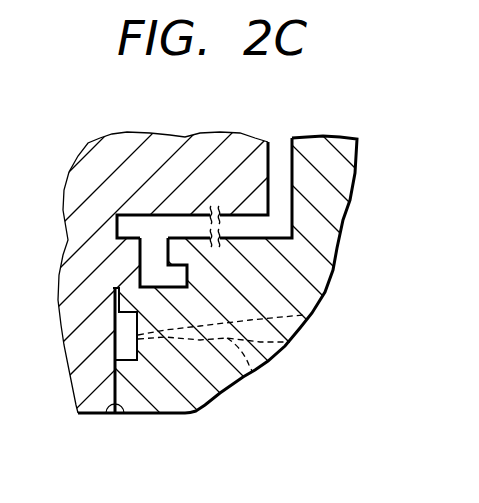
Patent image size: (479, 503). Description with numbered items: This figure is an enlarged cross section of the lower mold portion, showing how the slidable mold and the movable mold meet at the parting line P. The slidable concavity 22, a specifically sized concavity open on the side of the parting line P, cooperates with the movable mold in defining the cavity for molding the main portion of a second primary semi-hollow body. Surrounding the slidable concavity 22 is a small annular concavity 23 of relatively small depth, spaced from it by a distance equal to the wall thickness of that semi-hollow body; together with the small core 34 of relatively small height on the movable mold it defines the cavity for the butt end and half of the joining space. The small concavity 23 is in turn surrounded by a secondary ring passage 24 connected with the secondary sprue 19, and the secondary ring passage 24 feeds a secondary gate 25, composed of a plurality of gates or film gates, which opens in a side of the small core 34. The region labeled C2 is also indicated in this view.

The slidable concavity 22 is at (293, 160).
The second chip C2 is at (280, 198).
The small core 34 is at (127, 256).
The secondary gate 25 is at (112, 307).
The secondary ring passage 24 is at (122, 341).
The small annular concavity 23 is at (177, 277).
The secondary sprue 19 is at (253, 371).
The parting line P is at (100, 413).